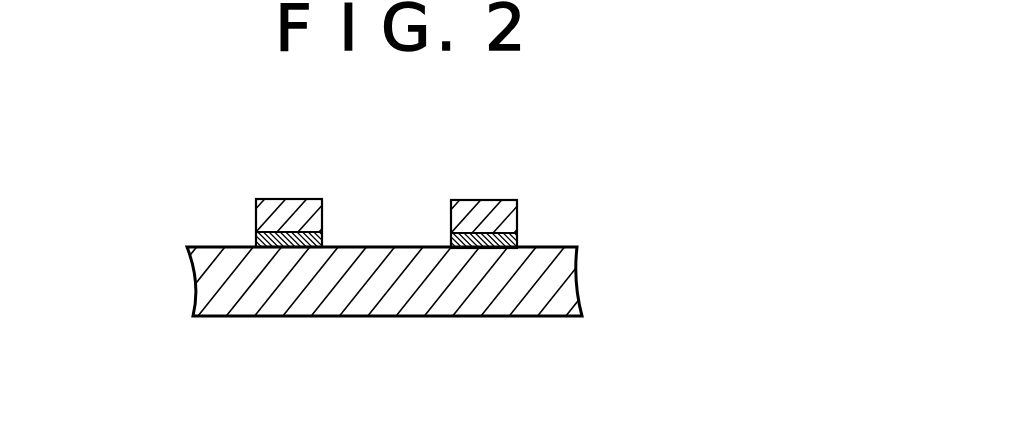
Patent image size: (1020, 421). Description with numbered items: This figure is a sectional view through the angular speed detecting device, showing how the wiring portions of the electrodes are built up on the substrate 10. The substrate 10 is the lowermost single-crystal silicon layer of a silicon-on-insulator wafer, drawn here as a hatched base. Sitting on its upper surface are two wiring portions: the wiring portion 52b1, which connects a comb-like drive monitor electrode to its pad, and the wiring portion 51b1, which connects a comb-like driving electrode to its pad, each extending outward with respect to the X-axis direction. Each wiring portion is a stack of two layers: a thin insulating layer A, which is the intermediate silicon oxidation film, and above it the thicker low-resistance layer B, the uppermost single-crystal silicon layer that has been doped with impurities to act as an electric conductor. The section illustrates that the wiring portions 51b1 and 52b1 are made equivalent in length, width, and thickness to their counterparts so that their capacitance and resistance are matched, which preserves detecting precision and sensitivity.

The substrate 10 is at (578, 268).
The wiring portion 52b1 is at (272, 198).
The wiring portion 51b1 is at (553, 173).
The low-resistance layer B is at (516, 213).
The insulating layer A is at (516, 240).